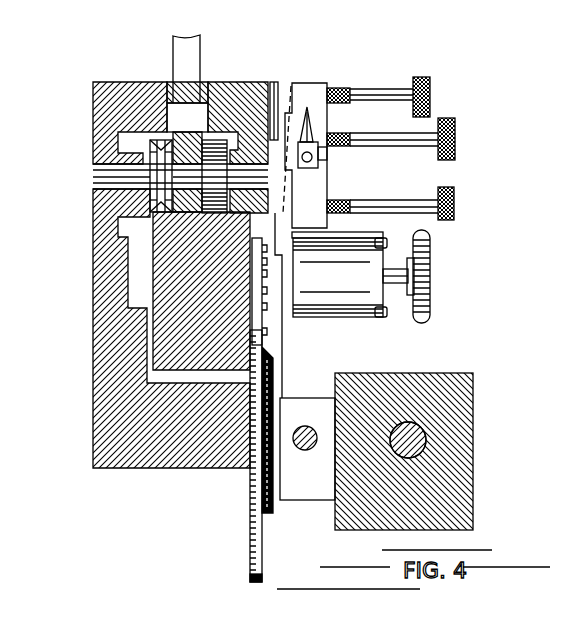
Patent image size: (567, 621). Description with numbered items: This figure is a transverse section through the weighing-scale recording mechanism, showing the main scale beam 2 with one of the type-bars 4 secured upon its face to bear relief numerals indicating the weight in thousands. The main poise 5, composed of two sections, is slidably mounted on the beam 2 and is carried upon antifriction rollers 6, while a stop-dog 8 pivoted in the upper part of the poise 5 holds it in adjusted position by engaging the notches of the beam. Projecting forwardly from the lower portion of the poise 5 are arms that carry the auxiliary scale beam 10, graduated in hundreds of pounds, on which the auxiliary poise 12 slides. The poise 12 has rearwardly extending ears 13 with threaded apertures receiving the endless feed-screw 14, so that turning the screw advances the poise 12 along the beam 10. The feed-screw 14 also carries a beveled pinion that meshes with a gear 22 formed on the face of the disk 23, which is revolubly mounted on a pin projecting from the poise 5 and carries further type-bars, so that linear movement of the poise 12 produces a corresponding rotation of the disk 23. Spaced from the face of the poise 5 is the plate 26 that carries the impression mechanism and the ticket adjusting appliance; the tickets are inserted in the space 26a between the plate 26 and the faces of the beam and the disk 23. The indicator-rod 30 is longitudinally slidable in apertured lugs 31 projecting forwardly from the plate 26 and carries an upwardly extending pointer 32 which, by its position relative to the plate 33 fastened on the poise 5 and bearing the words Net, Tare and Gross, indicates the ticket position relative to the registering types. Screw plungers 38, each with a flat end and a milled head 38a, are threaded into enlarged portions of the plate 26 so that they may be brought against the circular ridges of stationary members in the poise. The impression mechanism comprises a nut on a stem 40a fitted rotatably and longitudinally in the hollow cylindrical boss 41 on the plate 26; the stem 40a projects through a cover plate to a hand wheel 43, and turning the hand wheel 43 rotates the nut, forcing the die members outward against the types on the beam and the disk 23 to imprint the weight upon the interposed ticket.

The main scale beam 2 is at (157, 280).
The type-bars 4 is at (262, 253).
The main poise 5 is at (93, 256).
The antifriction rollers 6 is at (217, 142).
The stop-dog 8 is at (173, 47).
The auxiliary scale beam 10 is at (420, 445).
The auxiliary poise 12 is at (462, 372).
The ears 13 is at (302, 486).
The feed-screw 14 is at (306, 424).
The gear 22 is at (275, 362).
The disk 23 is at (250, 521).
The plate 26 is at (317, 83).
The space 26a is at (290, 82).
The indicator-rod 30 is at (328, 163).
The apertured lugs 31 is at (307, 193).
The pointer 32 is at (307, 128).
The plate 33 is at (274, 82).
The screw plunger 38 is at (374, 88).
The milled head 38a is at (452, 116).
The stem 40a is at (397, 286).
The boss 41 is at (383, 276).
The hand wheel 43 is at (428, 270).